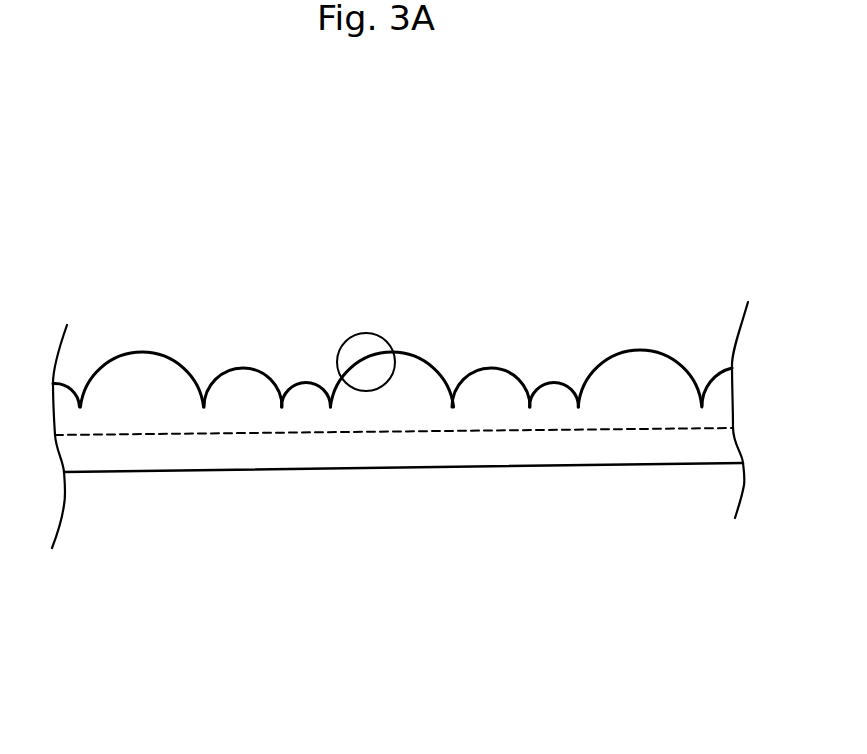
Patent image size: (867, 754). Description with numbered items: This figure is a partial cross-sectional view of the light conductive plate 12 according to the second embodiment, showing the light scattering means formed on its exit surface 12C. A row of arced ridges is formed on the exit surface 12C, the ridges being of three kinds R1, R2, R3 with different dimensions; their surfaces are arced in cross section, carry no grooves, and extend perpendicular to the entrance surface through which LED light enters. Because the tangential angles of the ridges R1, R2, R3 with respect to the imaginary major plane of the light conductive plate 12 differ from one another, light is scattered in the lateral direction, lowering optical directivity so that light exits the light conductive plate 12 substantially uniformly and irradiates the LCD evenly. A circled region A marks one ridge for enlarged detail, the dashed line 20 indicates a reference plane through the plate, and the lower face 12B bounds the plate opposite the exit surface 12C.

The light conductive plate 12 is at (653, 372).
The exit surface 12C is at (392, 255).
The bottom surface of light guide plate 12B is at (563, 467).
The reference plane (dashed line) 20 is at (293, 450).
The ridge R1 is at (139, 352).
The ridge R2 is at (242, 368).
The ridge R3 is at (307, 383).
The enlarged detail region A is at (360, 332).